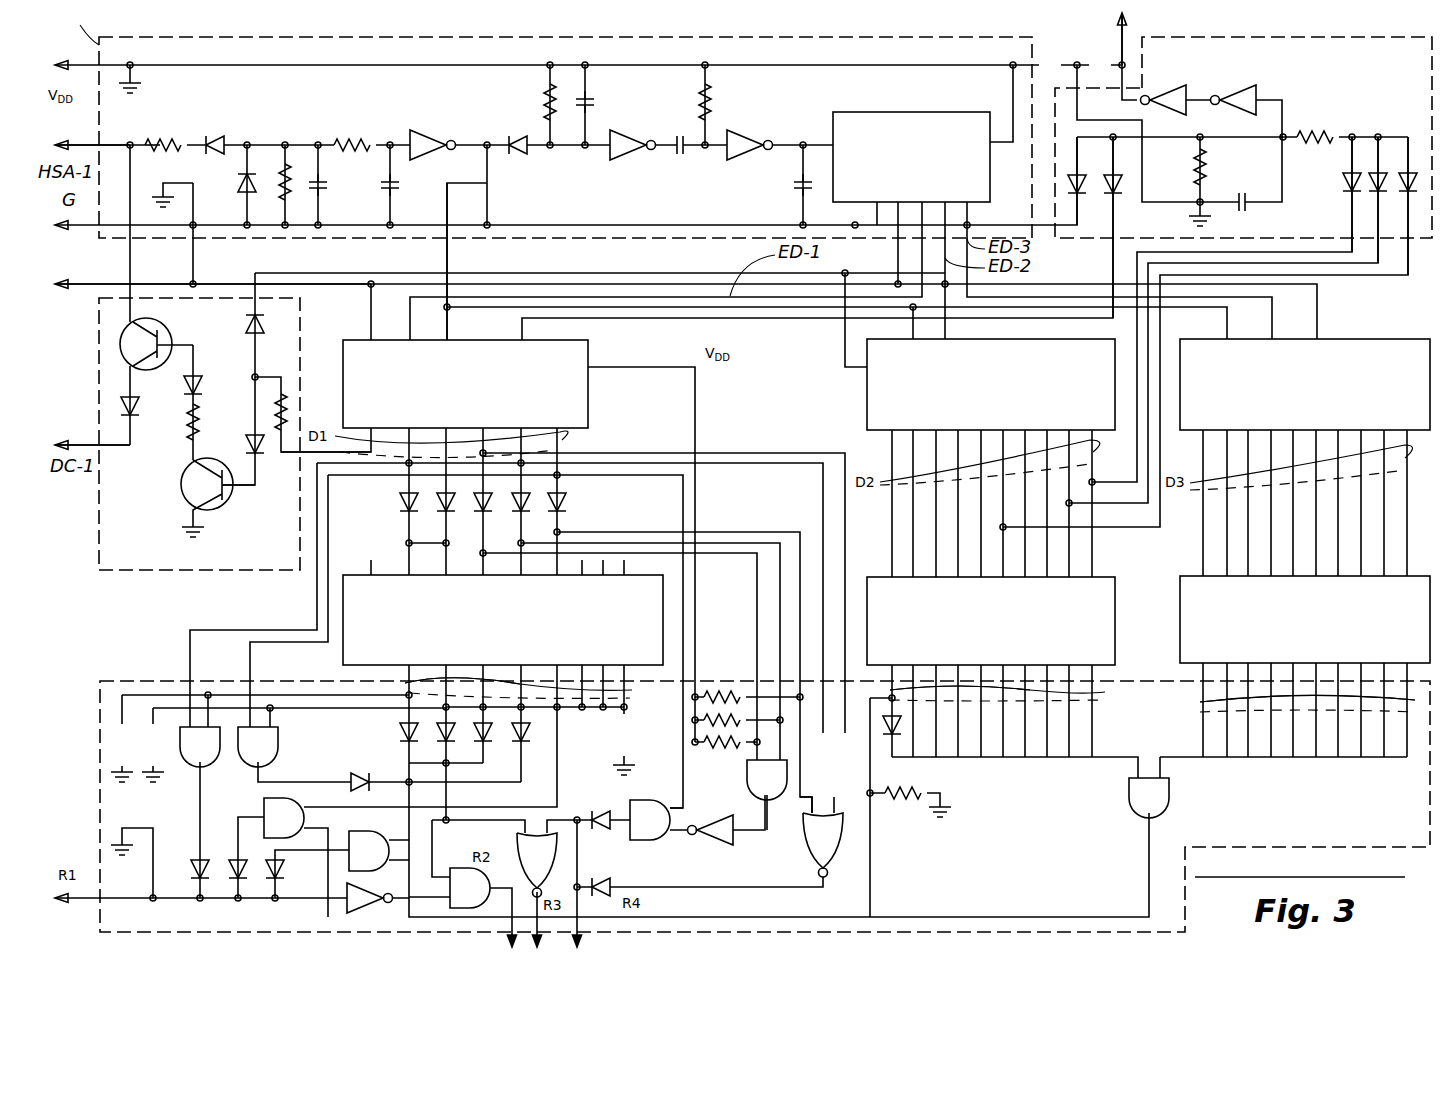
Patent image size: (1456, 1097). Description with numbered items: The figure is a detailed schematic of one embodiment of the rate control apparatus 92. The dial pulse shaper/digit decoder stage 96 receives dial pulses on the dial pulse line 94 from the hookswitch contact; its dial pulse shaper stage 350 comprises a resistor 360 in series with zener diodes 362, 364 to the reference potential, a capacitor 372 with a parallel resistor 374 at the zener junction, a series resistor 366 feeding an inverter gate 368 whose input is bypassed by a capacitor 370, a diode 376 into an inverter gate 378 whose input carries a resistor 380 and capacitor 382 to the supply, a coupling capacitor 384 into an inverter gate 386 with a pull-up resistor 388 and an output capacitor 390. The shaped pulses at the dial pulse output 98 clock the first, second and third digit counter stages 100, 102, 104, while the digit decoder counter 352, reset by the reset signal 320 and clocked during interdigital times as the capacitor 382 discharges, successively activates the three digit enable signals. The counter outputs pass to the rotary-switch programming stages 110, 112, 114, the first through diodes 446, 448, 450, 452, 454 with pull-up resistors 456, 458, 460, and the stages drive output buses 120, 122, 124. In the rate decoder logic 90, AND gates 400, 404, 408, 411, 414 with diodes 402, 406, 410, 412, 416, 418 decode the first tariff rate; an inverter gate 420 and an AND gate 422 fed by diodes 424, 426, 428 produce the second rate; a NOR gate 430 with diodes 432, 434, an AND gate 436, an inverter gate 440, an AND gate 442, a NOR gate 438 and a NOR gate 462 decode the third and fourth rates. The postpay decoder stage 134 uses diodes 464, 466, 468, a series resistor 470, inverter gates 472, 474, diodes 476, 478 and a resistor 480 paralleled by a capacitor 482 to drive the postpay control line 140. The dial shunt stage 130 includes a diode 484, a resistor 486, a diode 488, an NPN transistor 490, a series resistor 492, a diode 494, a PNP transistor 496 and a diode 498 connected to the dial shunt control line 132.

The rate decoder logic 90 is at (135, 680).
The rate control apparatus 92 is at (1300, 826).
The dial pulse line 94 is at (92, 129).
The dial pulse shaper/digit decoder stage 96 is at (99, 45).
The dial pulse output 98 is at (467, 261).
The first digit counter stage 100 is at (590, 343).
The second digit counter stage 102 is at (865, 388).
The third digit counter stage 104 is at (1360, 338).
The first digit programming stage 110 is at (343, 650).
The second digit programming stage 112 is at (867, 592).
The third digit programming stage 114 is at (1180, 597).
The output bus 120 is at (535, 691).
The output bus 122 is at (1016, 691).
The output bus 124 is at (1282, 713).
The dial shunt stage 130 is at (140, 572).
The dial shunt control line 132 is at (92, 428).
The postpay decoder stage 134 is at (1345, 35).
The postpay control line 140 is at (1120, 30).
The reset signal 320 is at (213, 267).
The dial pulse shaper stage 350 is at (293, 115).
The digit decoder counter 352 is at (925, 112).
The resistor 360 is at (172, 138).
The zener diode 362 is at (212, 135).
The zener diode 364 is at (240, 182).
The series resistor 366 is at (366, 138).
The inverter gate 368 is at (448, 128).
The capacitor 370 is at (405, 185).
The capacitor 372 is at (334, 185).
The resistor 374 is at (280, 162).
The diode 376 is at (518, 134).
The inverter gate 378 is at (630, 160).
The resistor 380 is at (540, 105).
The capacitor 382 is at (594, 100).
The capacitor 384 is at (678, 155).
The inverter gate 386 is at (740, 128).
The resistor 388 is at (712, 105).
The capacitor 390 is at (795, 192).
The two-input AND gate 400 is at (218, 750).
The diode 402 is at (195, 858).
The two-input AND gate 404 is at (278, 745).
The diode 406 is at (355, 775).
The two-input AND gate 408 is at (352, 842).
The diode 410 is at (268, 880).
The two-input AND gate 411 is at (1130, 797).
The diode 412 is at (905, 735).
The AND gate 414 is at (262, 800).
The diode 416 is at (230, 880).
The diode 418 is at (528, 735).
The inverter gate 420 is at (347, 910).
The AND gate 422 is at (442, 860).
The diode 424 is at (402, 730).
The diode 426 is at (438, 728).
The diode 428 is at (490, 738).
The two-input NOR gate 430 is at (558, 850).
The diode 432 is at (604, 810).
The diode 434 is at (605, 878).
The two-input AND gate 436 is at (632, 803).
The two-input NOR gate 438 is at (845, 860).
The inverter gate 440 is at (715, 848).
The two-input AND gate 442 is at (785, 800).
The diode 446 is at (400, 502).
The diode 448 is at (437, 503).
The diode 450 is at (478, 510).
The diode 452 is at (530, 497).
The diode 454 is at (565, 508).
The pull-up resistor 456 is at (718, 690).
The pull-up resistor 458 is at (712, 728).
The pull-up resistor 460 is at (722, 748).
The two-input NOR gate 462 is at (850, 795).
The diode 464 is at (1343, 183).
The diode 466 is at (1372, 194).
The diode 468 is at (1415, 170).
The series resistor 470 is at (1310, 128).
The inverter gate 472 is at (1258, 88).
The inverter gate 474 is at (1155, 98).
The diode 476 is at (1120, 192).
The diode 478 is at (1085, 175).
The resistor 480 is at (1208, 180).
The capacitor 482 is at (1238, 214).
The diode 484 is at (250, 325).
The resistor 486 is at (283, 445).
The diode 488 is at (248, 438).
The NPN transistor 490 is at (190, 503).
The series resistor 492 is at (185, 428).
The diode 494 is at (185, 382).
The PNP transistor 496 is at (140, 330).
The diode 498 is at (122, 400).